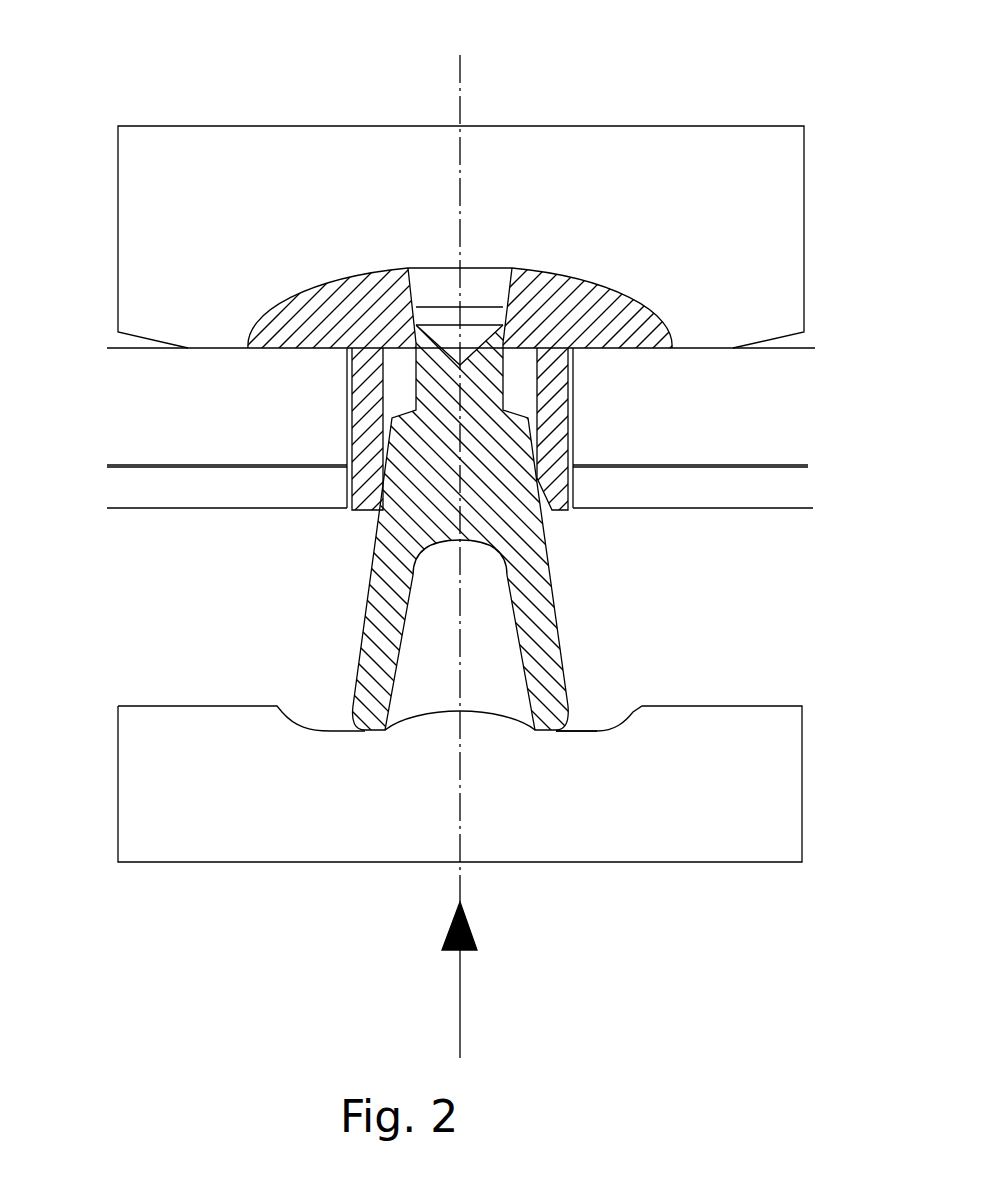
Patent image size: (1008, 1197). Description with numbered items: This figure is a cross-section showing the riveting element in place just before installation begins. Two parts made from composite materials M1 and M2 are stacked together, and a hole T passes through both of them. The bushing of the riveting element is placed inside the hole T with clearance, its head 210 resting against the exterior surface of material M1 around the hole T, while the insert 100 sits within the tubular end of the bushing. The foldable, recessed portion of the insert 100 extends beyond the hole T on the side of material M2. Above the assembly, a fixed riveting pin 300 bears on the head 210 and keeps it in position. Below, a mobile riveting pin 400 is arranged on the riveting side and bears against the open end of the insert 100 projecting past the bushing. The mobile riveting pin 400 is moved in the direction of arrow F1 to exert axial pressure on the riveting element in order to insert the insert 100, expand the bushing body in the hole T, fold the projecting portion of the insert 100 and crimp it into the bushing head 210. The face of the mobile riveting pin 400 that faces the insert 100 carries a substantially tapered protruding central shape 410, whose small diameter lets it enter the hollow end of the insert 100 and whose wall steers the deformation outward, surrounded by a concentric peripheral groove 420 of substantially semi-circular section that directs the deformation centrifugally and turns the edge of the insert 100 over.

The insert 100 is at (547, 585).
The head 210 is at (302, 308).
The fixed riveting pin 300 is at (232, 170).
The mobile riveting pin 400 is at (148, 758).
The protruding central shape 410 is at (483, 715).
The concentric peripheral groove 420 is at (597, 730).
The material M1 is at (800, 383).
The material M2 is at (785, 492).
The hole T is at (347, 470).
The arrow F1 is at (490, 980).